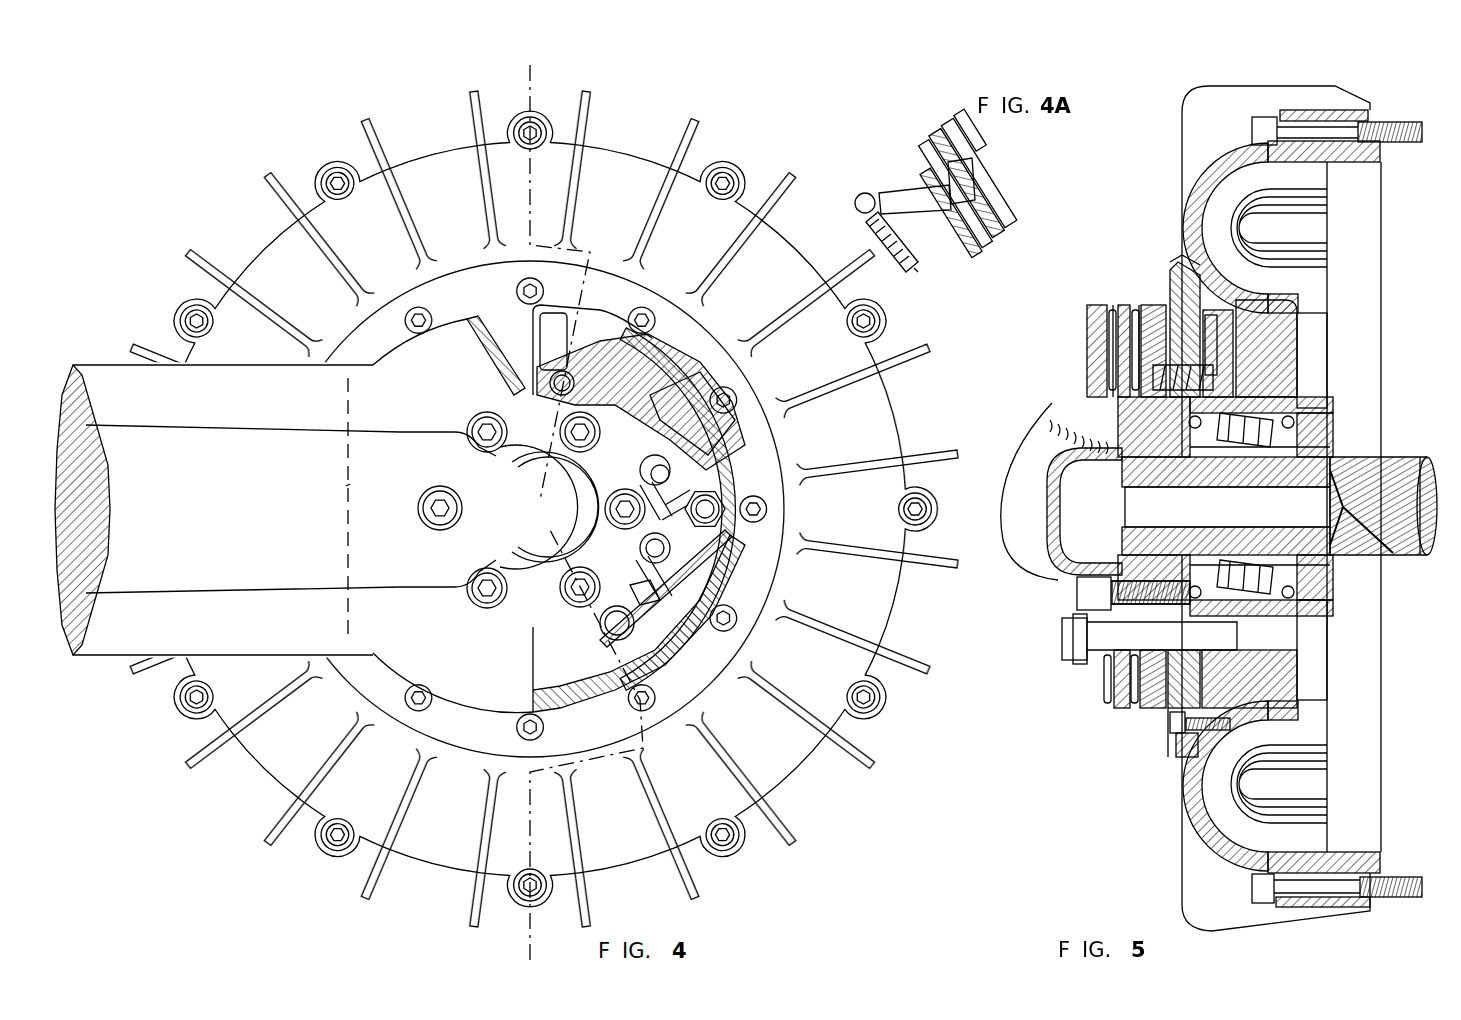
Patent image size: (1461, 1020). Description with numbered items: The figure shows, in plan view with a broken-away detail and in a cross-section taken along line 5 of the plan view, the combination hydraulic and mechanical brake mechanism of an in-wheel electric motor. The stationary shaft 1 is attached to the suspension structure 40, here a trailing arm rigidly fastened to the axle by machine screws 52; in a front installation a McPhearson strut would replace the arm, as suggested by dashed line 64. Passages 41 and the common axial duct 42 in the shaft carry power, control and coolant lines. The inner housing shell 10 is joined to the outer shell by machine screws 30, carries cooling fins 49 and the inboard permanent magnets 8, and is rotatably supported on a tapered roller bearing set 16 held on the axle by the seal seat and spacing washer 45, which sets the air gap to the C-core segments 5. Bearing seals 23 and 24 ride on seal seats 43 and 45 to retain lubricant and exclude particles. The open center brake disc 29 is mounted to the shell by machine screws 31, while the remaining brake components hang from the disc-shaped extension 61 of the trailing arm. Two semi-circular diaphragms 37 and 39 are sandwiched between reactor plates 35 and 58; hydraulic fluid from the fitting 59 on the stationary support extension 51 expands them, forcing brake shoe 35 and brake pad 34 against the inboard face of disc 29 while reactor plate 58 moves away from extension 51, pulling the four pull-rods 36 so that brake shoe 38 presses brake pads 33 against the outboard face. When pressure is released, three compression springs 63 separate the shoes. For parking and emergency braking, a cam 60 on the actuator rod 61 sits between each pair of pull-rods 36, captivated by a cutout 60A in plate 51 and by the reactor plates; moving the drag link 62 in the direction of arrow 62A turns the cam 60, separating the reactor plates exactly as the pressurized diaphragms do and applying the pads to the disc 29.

In FIG. 5, the stationary shaft 1 is at (1432, 480).
In FIG. 4, the C-core segments 5 is at (472, 960).
In FIG. 5, the inboard permanent magnets 8 is at (1277, 497).
In FIG. 4, the inner housing shell 10 is at (625, 152).
In FIG. 5, the inner housing shell 10 is at (1160, 798).
In FIG. 5, the tapered roller bearing set 16 is at (1355, 456).
In FIG. 5, the bearing seal 23 is at (1290, 425).
In FIG. 5, the bearing seal 24 is at (1215, 383).
In FIG. 4, the brake disc 29 is at (621, 520).
In FIG. 5, the brake disc 29 is at (1176, 264).
In FIG. 4, the machine screws 30 is at (728, 845).
In FIG. 5, the machine screws 30 is at (1262, 112).
In FIG. 4, the machine screws 31 is at (418, 698).
In FIG. 5, the machine screws 31 is at (1172, 730).
In FIG. 5, the brake pads 33 is at (1210, 305).
In FIG. 4, the brake pad 34 is at (600, 330).
In FIG. 5, the brake pad 34 is at (1168, 305).
In FIG. 4A, the reactor plate 35 is at (978, 172).
In FIG. 5, the reactor plate 35 is at (1155, 305).
In FIG. 4, the pull-rods 36 is at (604, 632).
In FIG. 5, the pull-rods 36 is at (1062, 640).
In FIG. 4, the diaphragm 37 is at (652, 392).
In FIG. 5, the diaphragm 37 is at (1122, 305).
In FIG. 5, the semi-circular brake shoe 38 is at (1255, 300).
In FIG. 4, the diaphragm 39 is at (740, 528).
In FIG. 5, the diaphragm 39 is at (1106, 350).
In FIG. 4, the suspension structure 40 is at (227, 510).
In FIG. 5, the suspension structure 40 is at (1036, 425).
In FIG. 5, the passages 41 is at (1395, 465).
In FIG. 5, the common axial duct 42 is at (1140, 505).
In FIG. 5, the seal seat 43 is at (1330, 566).
In FIG. 5, the seal seat and spacing washer 45 is at (1208, 460).
In FIG. 4, the fins 49 is at (790, 770).
In FIG. 5, the fins 49 is at (1182, 135).
In FIG. 4, the stationary support extension 51 is at (696, 378).
In FIG. 4A, the stationary support extension 51 is at (905, 150).
In FIG. 5, the stationary support extension 51 is at (1113, 310).
In FIG. 4, the machine screws 52 is at (578, 590).
In FIG. 5, the machine screws 52 is at (1078, 592).
In FIG. 4, the reactor plate 58 is at (644, 605).
In FIG. 4A, the reactor plate 58 is at (970, 130).
In FIG. 5, the reactor plate 58 is at (1088, 318).
In FIG. 4, the fitting 59 is at (712, 500).
In FIG. 4, the cam 60 is at (642, 550).
In FIG. 4A, the cam 60 is at (963, 213).
In FIG. 4A, the cutout 60A is at (966, 183).
In FIG. 4, the actuator rod 61 is at (650, 552).
In FIG. 4A, the actuator rod 61 is at (905, 192).
In FIG. 4A, the drag link 62 is at (866, 216).
In FIG. 4A, the arrow 62A is at (918, 272).
In FIG. 4, the compression springs 63 is at (566, 378).
In FIG. 5, the compression springs 63 is at (1245, 375).
In FIG. 4, the dashed line 64 is at (348, 490).